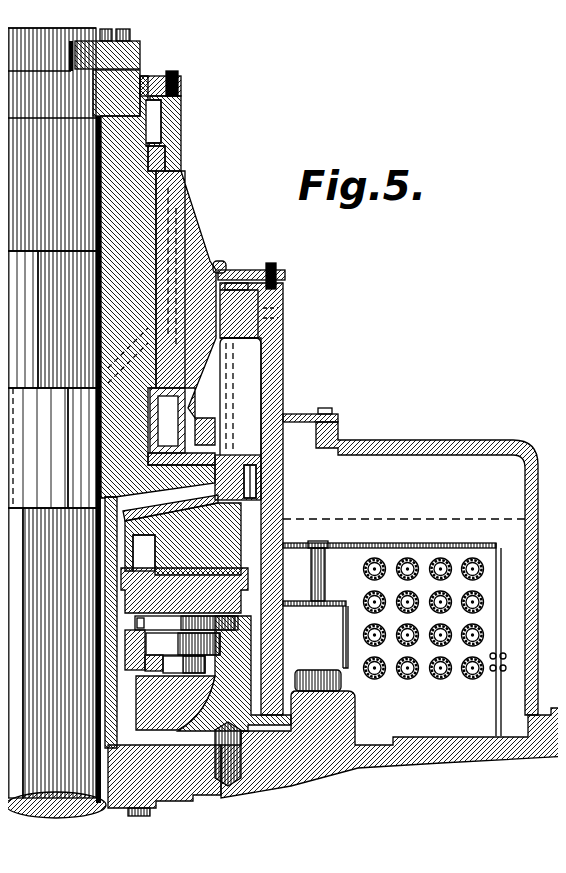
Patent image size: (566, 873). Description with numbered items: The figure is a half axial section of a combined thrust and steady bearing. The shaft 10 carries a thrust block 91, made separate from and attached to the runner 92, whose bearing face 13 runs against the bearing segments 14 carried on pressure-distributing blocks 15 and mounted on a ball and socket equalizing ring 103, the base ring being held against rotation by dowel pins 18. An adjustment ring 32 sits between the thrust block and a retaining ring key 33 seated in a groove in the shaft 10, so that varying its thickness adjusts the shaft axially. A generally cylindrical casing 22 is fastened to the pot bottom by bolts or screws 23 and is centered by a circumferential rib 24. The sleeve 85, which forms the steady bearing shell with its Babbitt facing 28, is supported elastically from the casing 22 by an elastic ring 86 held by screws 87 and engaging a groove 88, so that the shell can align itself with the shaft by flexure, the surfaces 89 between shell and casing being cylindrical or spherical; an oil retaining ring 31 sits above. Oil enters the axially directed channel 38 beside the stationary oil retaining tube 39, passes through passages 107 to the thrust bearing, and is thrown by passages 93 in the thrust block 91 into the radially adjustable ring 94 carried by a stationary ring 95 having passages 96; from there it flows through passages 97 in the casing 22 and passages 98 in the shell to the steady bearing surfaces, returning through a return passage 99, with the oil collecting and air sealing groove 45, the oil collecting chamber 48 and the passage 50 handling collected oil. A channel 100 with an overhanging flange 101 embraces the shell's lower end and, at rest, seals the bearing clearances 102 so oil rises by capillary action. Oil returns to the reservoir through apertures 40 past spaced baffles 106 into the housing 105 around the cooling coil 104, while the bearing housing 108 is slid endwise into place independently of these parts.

The shaft 10 is at (57, 423).
The bearing face 13 is at (128, 612).
The bearing segments 14 is at (140, 636).
The pressure-distributing blocks 15 is at (160, 656).
The dowel pins 18 is at (220, 757).
The casing 22 is at (276, 347).
The bolts or screws 23 is at (310, 663).
The circumferential rib 24 is at (283, 723).
The Babbitt facing 28 is at (137, 205).
The oil retaining ring 31 is at (178, 74).
The adjustment ring 32 is at (128, 68).
The retaining ring key 33 is at (120, 40).
The axially directed channel 38 is at (120, 545).
The stationary oil retaining tube 39 is at (112, 737).
The apertures 40 is at (283, 540).
The oil collecting and air sealing groove 45 is at (160, 152).
The oil collecting chamber 48 is at (150, 118).
The passage 50 is at (168, 104).
The sleeve 85 is at (165, 228).
The elastic ring 86 is at (232, 263).
The screws 87 is at (266, 258).
The groove 88 is at (212, 255).
The surfaces 89 is at (276, 292).
The thrust block 91 is at (120, 433).
The runner 92 is at (150, 565).
The passages 93 is at (136, 540).
The radially adjustable ring 94 is at (290, 405).
The stationary ring 95 is at (248, 470).
The passages 96 is at (238, 482).
The passages 97 is at (272, 313).
The passages 98 is at (118, 342).
The return passage 99 is at (172, 192).
The channel 100 is at (252, 413).
The overhanging flange 101 is at (185, 420).
The bearing clearances 102 is at (140, 462).
The ball and socket equalizing ring 103 is at (150, 695).
The cooling coil 104 is at (463, 552).
The housing 105 is at (370, 535).
The spaced baffles 106 is at (302, 592).
The passages 107 is at (330, 655).
The bearing housing 108 is at (447, 433).